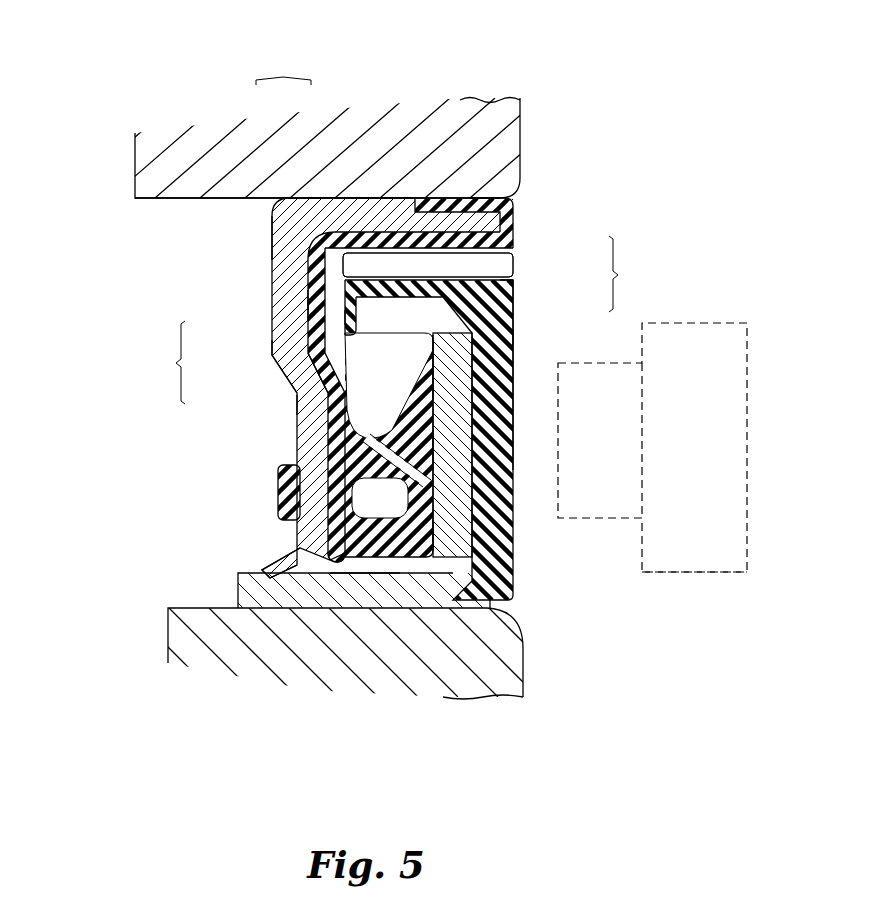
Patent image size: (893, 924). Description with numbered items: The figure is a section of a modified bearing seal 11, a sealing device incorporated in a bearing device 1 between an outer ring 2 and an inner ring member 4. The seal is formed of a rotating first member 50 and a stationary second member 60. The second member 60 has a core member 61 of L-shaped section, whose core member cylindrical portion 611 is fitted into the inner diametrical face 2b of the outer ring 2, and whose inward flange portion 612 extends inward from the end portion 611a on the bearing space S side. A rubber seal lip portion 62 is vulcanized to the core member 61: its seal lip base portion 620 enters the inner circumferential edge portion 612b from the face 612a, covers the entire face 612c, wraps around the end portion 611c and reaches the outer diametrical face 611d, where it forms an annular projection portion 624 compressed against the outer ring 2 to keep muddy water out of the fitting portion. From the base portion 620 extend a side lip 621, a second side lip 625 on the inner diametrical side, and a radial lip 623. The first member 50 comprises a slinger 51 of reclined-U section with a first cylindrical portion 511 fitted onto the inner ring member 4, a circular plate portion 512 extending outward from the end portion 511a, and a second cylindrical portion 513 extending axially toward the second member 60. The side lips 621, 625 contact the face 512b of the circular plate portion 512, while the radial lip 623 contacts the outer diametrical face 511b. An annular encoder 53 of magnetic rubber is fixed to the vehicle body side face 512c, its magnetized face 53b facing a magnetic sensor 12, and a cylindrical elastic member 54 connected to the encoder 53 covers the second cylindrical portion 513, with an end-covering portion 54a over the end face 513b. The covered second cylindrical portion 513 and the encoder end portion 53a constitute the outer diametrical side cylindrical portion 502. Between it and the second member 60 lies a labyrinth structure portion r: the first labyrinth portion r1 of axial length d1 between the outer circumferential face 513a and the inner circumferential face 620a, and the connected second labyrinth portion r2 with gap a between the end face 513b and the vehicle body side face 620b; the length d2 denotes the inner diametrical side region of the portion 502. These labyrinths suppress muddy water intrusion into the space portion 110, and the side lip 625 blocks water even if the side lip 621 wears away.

The bearing device 1 is at (643, 146).
The outer ring 2 is at (428, 148).
The inner diametrical face 2b is at (163, 196).
The inner ring member 4 is at (524, 697).
The bearing seal 11 is at (686, 259).
The magnetic sensor 12 is at (709, 573).
The first member 50 is at (546, 395).
The slinger 51 is at (526, 460).
The outer diametrical side cylindrical portion 502 is at (632, 274).
The first cylindrical portion 511 is at (513, 597).
The end portion 511a is at (521, 632).
The outer diametrical face 511b is at (352, 592).
The circular plate portion 512 is at (516, 566).
The face on the bearing space side 512b is at (380, 492).
The vehicle body side face 512c is at (518, 452).
The second cylindrical portion 513 is at (497, 282).
The outer circumferential face 513a is at (372, 280).
The end face 513b is at (372, 336).
The annular encoder 53 is at (520, 435).
The outer diametrical side end portion 53a is at (515, 303).
The vehicle body side face 53b is at (512, 443).
The cylindrical elastic member 54 is at (500, 262).
The end-covering portion 54a is at (345, 318).
The second member 60 is at (169, 362).
The core member 61 is at (260, 344).
The core member cylindrical portion 611 is at (350, 236).
The end portion 611a is at (274, 214).
The end portion 611c is at (516, 232).
The outer diametrical face 611d is at (508, 196).
The inward flange portion 612 is at (303, 272).
The face on the bearing space side 612a is at (298, 451).
The inner circumferential edge portion 612b is at (338, 562).
The face opposite to the bearing space 612c is at (277, 498).
The seal lip portion 62 is at (300, 397).
The seal lip base portion 620 is at (300, 418).
The inner circumferential face 620a is at (425, 210).
The vehicle body side face 620b is at (298, 357).
The side lip 621 is at (506, 374).
The radial lip 623 is at (278, 574).
The annular projection portion 624 is at (480, 200).
The side lip 625 is at (516, 548).
The space portion 110 is at (300, 404).
The bearing space S is at (150, 432).
The gap a is at (312, 300).
The labyrinth structure portion r is at (283, 70).
The first labyrinth portion r1 is at (318, 240).
The second labyrinth portion r2 is at (300, 236).
The length of the first labyrinth portion d1 is at (385, 262).
The length of the inner diametrical side region d2 is at (514, 338).